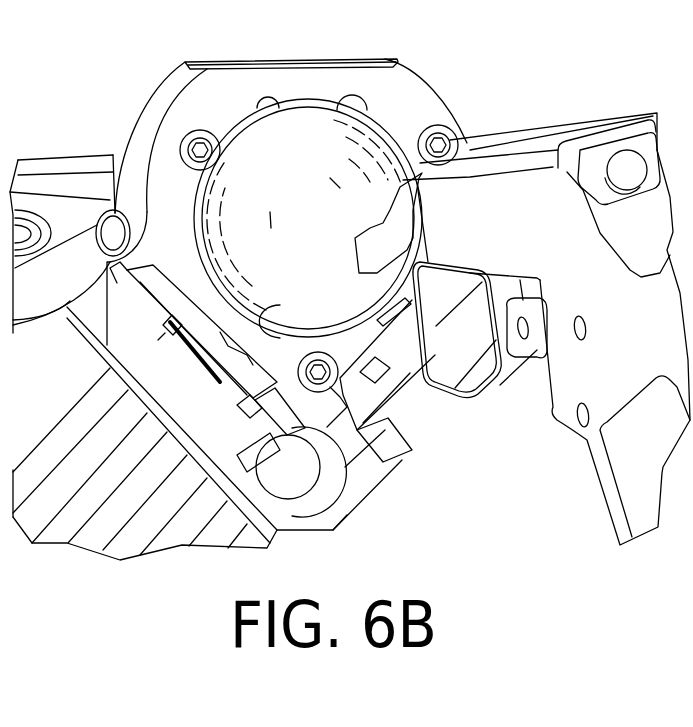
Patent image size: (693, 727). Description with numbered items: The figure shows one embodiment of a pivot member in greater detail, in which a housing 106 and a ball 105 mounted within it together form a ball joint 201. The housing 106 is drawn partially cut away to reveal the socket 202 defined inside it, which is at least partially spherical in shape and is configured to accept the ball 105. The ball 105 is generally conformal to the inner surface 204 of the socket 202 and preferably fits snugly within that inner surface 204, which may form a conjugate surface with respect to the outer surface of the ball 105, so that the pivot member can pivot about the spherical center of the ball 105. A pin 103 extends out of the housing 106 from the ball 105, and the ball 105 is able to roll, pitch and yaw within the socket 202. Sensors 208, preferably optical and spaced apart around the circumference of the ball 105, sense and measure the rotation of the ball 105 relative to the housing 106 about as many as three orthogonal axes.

The pin 103 is at (372, 253).
The ball 105 is at (343, 120).
The housing 106 is at (292, 58).
The ball joint 201 is at (457, 78).
The socket 202 is at (247, 117).
The inner surface 204 is at (197, 195).
The sensors 208 is at (217, 337).